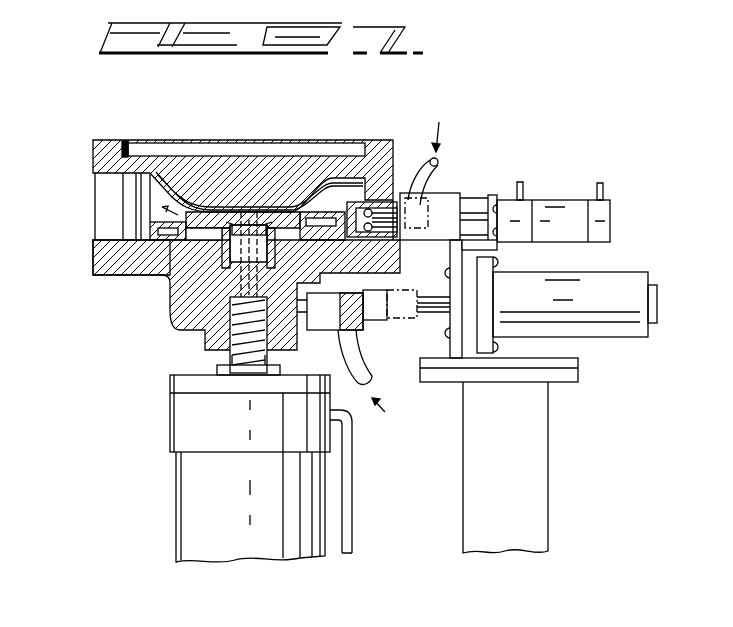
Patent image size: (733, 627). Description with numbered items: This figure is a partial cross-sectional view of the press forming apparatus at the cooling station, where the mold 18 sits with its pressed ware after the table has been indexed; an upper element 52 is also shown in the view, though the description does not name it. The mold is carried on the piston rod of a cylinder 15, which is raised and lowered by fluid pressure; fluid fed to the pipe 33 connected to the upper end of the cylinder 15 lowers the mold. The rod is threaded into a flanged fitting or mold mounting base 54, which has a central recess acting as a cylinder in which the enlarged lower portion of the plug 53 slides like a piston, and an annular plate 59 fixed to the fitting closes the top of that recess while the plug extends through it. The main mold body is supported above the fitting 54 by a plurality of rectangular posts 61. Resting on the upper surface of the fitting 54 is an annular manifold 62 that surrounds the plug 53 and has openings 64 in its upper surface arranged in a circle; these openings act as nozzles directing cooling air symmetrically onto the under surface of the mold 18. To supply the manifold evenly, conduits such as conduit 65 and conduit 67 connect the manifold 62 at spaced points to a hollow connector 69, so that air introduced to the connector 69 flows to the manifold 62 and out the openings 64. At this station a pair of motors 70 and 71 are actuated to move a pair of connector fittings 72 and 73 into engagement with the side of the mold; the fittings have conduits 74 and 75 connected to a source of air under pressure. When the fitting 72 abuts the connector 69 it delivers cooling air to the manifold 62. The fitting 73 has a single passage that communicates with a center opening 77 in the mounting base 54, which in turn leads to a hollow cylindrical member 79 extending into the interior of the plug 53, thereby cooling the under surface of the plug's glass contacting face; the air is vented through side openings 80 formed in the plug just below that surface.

The cylinder 15 is at (190, 492).
The mold 18 is at (90, 152).
The pipe 33 is at (348, 477).
The sheet of material 52 is at (135, 145).
The plug 53 is at (207, 280).
The flanged fitting or mold mounting base 54 is at (225, 305).
The annular plate 59 is at (177, 268).
The rectangular posts 61 is at (110, 190).
The annular manifold 62 is at (170, 222).
The openings 64 is at (198, 222).
The conduit 65 is at (330, 230).
The conduit 67 is at (320, 227).
The hollow connector 69 is at (390, 200).
The motor 70 is at (548, 208).
The motor 71 is at (625, 280).
The connector fitting 72 is at (438, 200).
The connector fitting 73 is at (360, 322).
The conduit 74 is at (425, 185).
The conduit 75 is at (367, 366).
The center opening 77 is at (316, 315).
The hollow cylindrical member 79 is at (213, 292).
The side openings 80 is at (278, 220).